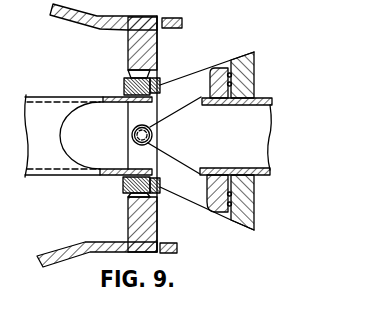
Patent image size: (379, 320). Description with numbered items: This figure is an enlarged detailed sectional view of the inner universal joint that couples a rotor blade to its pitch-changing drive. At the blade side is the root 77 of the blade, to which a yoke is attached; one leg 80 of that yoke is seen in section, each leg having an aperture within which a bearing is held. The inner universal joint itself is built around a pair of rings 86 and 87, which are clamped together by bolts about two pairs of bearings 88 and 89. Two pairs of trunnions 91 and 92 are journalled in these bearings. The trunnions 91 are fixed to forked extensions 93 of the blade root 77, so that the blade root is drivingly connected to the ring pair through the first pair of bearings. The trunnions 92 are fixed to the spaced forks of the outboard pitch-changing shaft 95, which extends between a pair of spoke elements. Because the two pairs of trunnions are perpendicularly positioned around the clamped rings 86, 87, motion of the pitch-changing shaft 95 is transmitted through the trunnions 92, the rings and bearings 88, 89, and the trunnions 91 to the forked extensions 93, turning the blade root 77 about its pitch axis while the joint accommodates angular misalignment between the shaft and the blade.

The blade root 77 is at (263, 177).
The yoke leg 80 is at (214, 212).
The ring 86 is at (125, 88).
The ring 87 is at (158, 85).
The bearing 88 is at (128, 72).
The bearing 89 is at (207, 141).
The trunnion 91 is at (132, 138).
The trunnion 92 is at (156, 69).
The forked extension 93 is at (174, 135).
The outboard pitch-changing shaft 95 is at (46, 173).